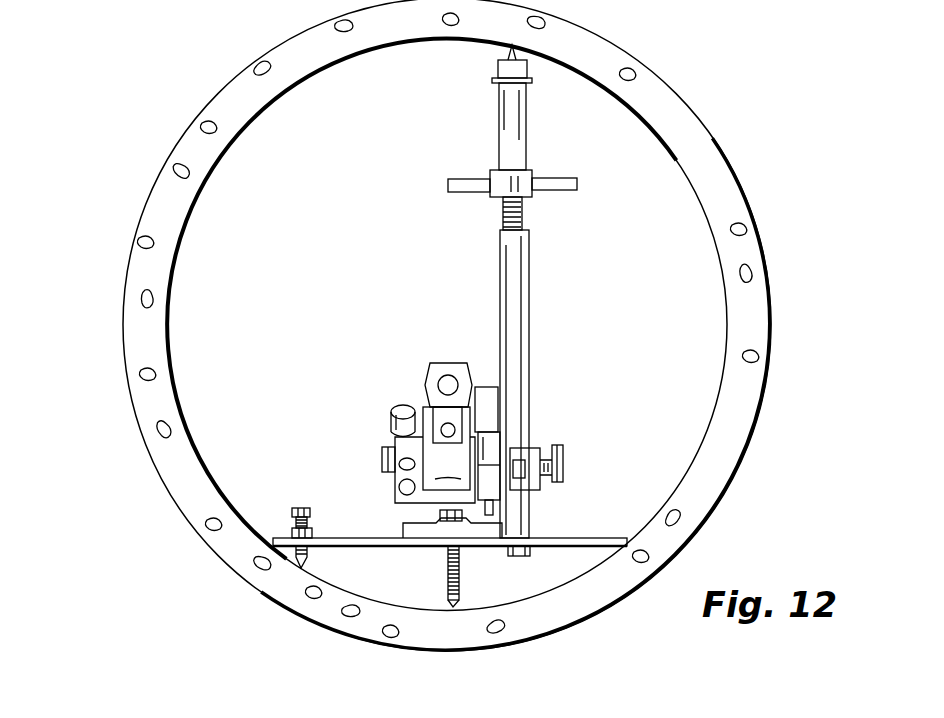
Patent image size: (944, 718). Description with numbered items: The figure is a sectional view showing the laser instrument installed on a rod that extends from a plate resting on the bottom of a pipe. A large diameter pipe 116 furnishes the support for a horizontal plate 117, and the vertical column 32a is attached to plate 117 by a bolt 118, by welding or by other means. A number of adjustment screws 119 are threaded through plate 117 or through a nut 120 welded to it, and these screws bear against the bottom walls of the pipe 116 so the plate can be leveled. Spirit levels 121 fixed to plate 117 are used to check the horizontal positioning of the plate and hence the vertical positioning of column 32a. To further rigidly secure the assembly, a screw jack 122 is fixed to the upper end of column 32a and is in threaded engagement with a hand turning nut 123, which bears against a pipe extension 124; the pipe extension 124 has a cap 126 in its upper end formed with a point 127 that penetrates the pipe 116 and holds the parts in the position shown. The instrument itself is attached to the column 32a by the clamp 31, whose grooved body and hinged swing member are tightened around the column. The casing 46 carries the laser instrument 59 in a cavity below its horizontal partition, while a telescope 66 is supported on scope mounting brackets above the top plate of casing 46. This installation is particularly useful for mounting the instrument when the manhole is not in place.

The large diameter pipe 116 is at (748, 214).
The horizontal plate 117 is at (574, 537).
The bolt 118 is at (508, 553).
The adjustment screws 119 is at (297, 508).
The nut 120 is at (316, 534).
The spirit levels 121 is at (405, 528).
The screw jack 122 is at (522, 211).
The hand turning nut 123 is at (472, 193).
The pipe extension 124 is at (496, 128).
The cap 126 is at (494, 73).
The point 127 is at (509, 47).
The vertical column 32a is at (530, 339).
The clamp 31 is at (540, 438).
The casing 46 is at (427, 405).
The laser instrument 59 is at (441, 451).
The telescope 66 is at (448, 380).